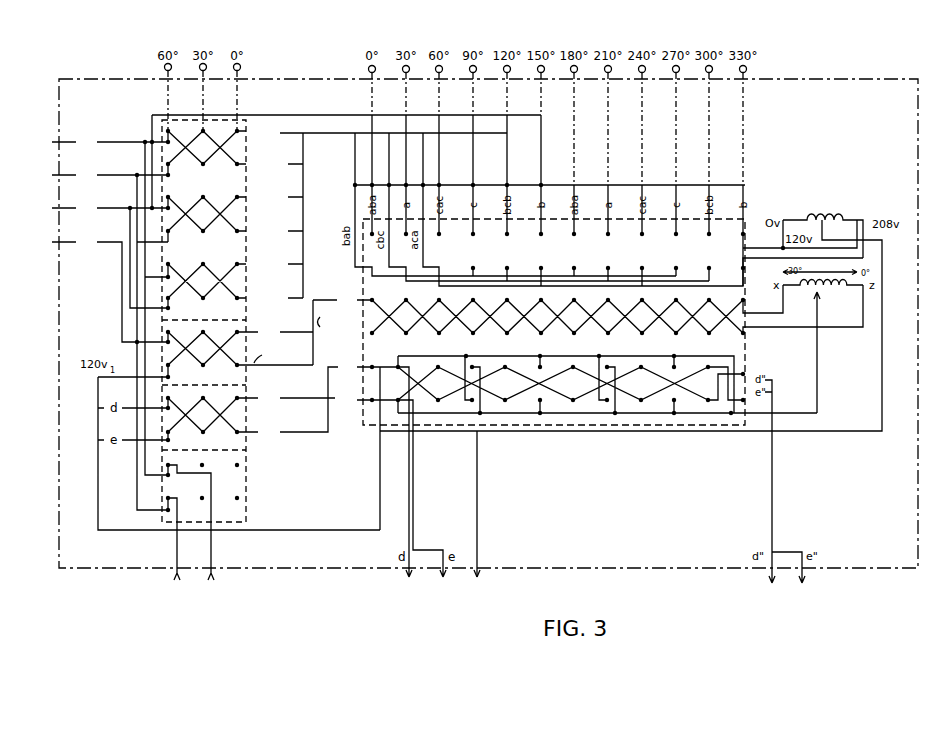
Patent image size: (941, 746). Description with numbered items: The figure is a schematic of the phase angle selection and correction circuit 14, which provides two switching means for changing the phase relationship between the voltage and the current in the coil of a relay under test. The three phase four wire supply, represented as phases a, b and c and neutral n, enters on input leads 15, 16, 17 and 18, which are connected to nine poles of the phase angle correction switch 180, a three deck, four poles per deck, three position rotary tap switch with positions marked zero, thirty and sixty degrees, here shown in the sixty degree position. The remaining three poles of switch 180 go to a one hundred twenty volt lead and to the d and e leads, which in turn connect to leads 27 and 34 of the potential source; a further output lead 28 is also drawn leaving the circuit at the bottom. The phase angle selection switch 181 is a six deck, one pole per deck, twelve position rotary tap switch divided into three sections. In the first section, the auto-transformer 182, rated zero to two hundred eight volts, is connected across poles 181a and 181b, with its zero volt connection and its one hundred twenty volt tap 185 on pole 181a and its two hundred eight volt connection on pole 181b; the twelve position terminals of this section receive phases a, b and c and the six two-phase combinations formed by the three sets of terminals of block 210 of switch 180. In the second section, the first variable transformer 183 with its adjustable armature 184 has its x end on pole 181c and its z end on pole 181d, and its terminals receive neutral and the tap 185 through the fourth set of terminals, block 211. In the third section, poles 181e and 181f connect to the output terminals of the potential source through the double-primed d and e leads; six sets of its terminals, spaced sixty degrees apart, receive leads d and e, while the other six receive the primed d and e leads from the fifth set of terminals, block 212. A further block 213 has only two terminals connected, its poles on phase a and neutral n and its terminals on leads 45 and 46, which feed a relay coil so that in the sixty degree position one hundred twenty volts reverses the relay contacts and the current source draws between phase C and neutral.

The phase angle selection and correction circuit 14 is at (864, 515).
The input lead 15 is at (58, 142).
The input lead 16 is at (58, 175).
The input lead 17 is at (58, 208).
The input lead 18 is at (58, 242).
The lead 27 is at (408, 576).
The output conductor 28 is at (480, 578).
The lead 34 is at (446, 578).
The lead 45 is at (175, 575).
The lead 46 is at (214, 575).
The phase angle correction switch 180 is at (250, 116).
The phase angle selection switch 181 is at (757, 222).
The pole 181a is at (741, 244).
The pole 181b is at (743, 268).
The pole 181c is at (745, 301).
The pole 181d is at (745, 334).
The pole 181e is at (745, 373).
The pole 181f is at (742, 401).
The auto-transformer 182 is at (820, 219).
The first variable transformer 183 is at (849, 293).
The adjustable armature 184 is at (814, 296).
The tap 185 is at (846, 226).
The block of terminals 210 is at (238, 310).
The block of terminals 211 is at (243, 373).
The block of terminals 212 is at (238, 440).
The block of terminals 213 is at (238, 497).